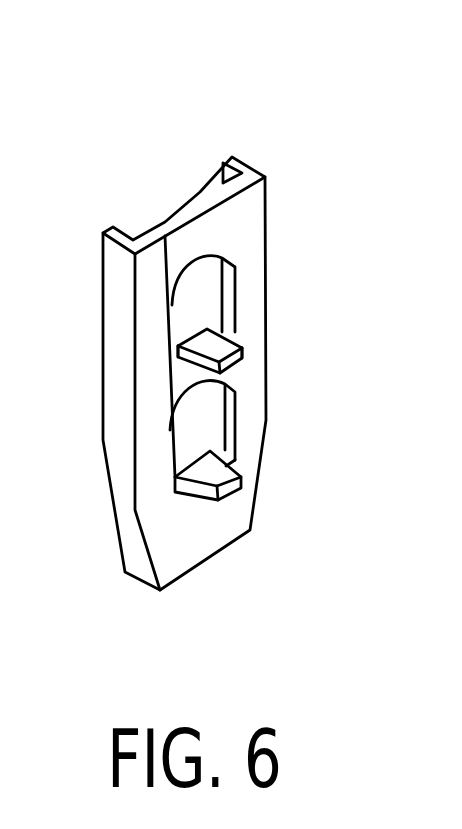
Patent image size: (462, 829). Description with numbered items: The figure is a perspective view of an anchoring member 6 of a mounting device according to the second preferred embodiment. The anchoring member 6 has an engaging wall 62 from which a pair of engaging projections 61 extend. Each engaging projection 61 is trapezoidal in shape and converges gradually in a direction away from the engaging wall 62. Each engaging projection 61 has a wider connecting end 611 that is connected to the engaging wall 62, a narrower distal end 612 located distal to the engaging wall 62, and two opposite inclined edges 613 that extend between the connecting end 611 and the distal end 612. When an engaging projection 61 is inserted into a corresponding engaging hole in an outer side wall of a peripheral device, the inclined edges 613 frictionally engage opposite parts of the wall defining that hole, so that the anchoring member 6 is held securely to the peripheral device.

The anchoring member 6 is at (218, 338).
The engaging projection 61 is at (238, 345).
The connecting end 611 is at (192, 332).
The distal end 612 is at (235, 372).
The inclined edges 613 is at (240, 352).
The engaging wall 62 is at (220, 233).